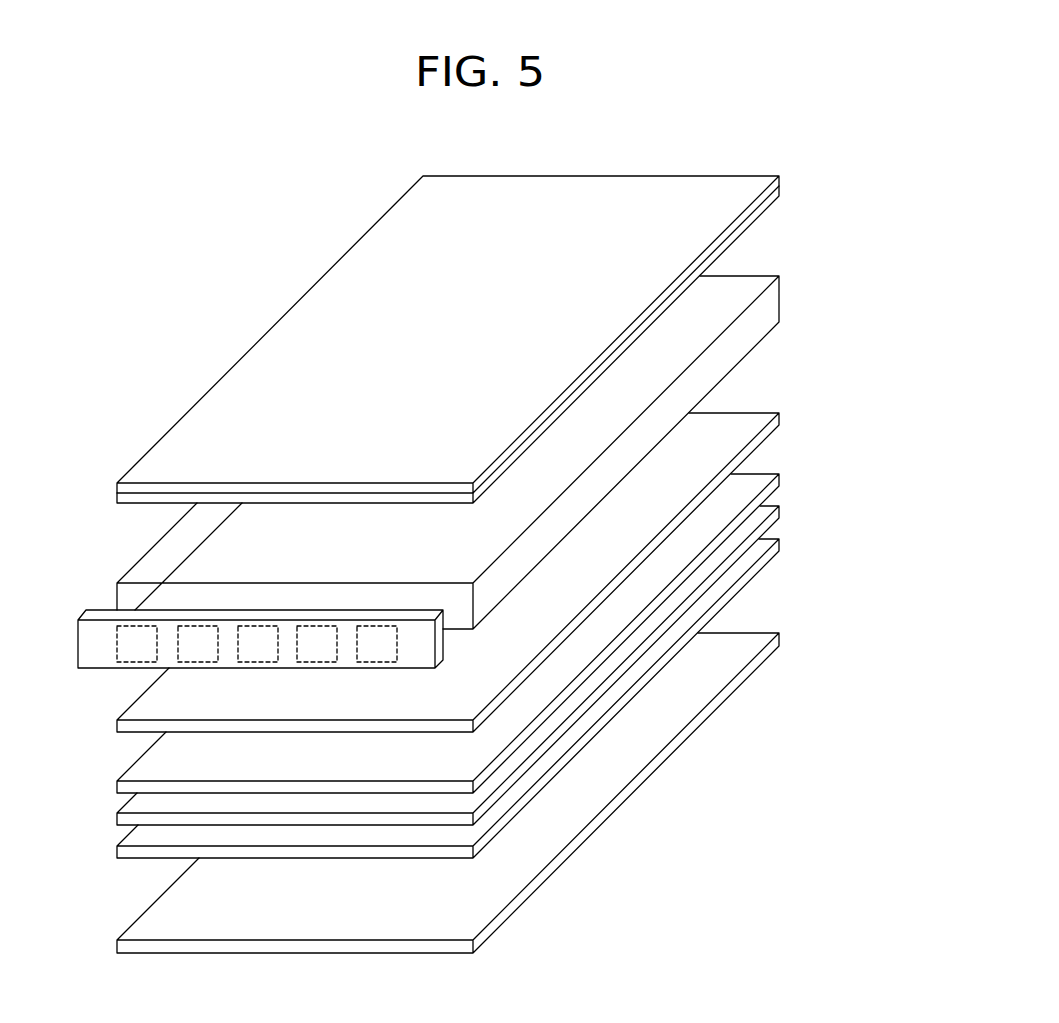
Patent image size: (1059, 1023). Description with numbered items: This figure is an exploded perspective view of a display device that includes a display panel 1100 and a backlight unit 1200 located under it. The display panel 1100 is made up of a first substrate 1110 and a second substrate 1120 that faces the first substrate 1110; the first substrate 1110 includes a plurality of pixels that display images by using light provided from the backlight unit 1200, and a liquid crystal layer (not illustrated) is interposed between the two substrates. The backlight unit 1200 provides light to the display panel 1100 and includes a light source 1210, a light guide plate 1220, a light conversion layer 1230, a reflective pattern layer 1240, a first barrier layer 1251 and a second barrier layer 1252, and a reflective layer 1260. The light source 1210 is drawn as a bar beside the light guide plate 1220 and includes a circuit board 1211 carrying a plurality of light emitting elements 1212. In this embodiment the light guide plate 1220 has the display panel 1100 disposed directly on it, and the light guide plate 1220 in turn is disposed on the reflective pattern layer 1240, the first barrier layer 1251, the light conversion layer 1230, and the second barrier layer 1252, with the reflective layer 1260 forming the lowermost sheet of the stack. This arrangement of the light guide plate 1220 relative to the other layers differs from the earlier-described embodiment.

The display panel 1100 is at (515, 336).
The first substrate 1110 is at (783, 200).
The second substrate 1120 is at (783, 179).
The backlight unit 1200 is at (431, 614).
The light source 1210 is at (413, 747).
The circuit board 1211 is at (396, 648).
The light emitting elements 1212 is at (443, 658).
The light guide plate 1220 is at (780, 299).
The light conversion layer 1230 is at (780, 510).
The reflective pattern layer 1240 is at (780, 414).
The first barrier layer 1251 is at (780, 479).
The second barrier layer 1252 is at (780, 542).
The reflective layer 1260 is at (780, 637).